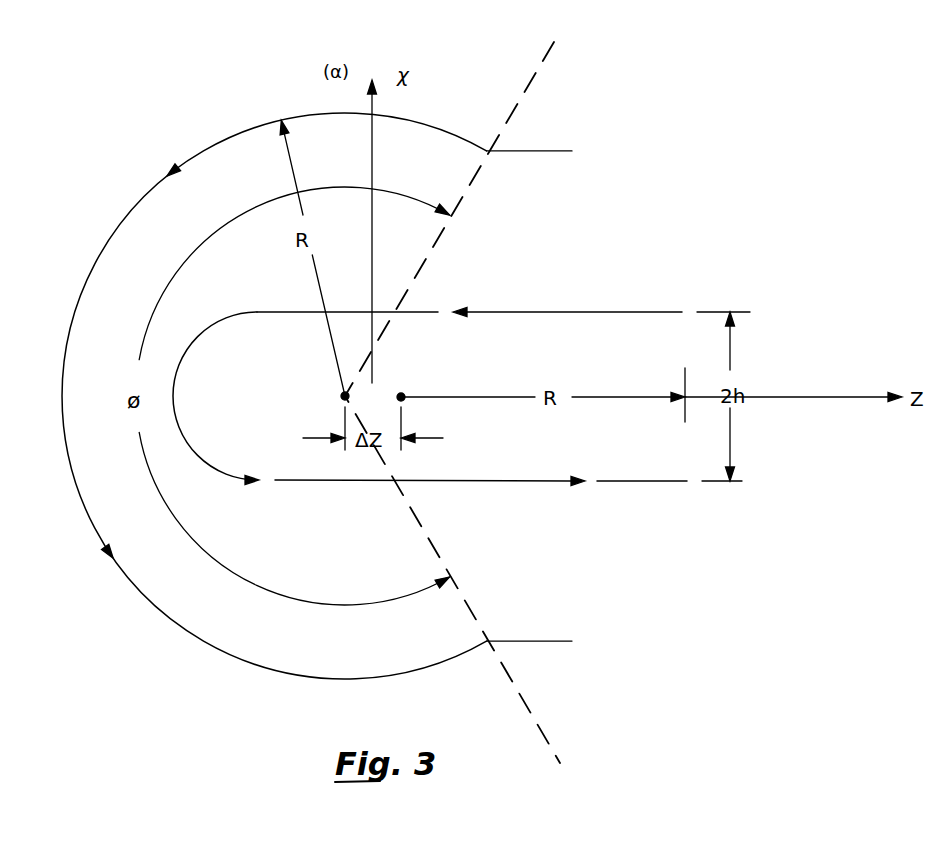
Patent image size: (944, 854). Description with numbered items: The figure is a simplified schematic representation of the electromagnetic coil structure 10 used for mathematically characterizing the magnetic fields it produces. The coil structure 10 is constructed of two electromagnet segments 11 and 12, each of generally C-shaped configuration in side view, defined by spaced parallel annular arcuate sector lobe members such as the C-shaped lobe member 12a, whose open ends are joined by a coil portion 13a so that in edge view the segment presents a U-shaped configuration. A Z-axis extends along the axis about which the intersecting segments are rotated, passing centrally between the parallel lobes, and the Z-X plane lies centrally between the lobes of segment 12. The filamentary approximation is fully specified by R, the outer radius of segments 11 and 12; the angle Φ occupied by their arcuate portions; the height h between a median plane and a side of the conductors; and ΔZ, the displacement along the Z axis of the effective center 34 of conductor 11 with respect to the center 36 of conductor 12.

The electromagnetic coil structure 10 is at (204, 456).
The electromagnet segment 11 is at (418, 314).
The electromagnet segment 12 is at (99, 434).
The C-shaped lobe member 12a is at (351, 156).
The coil portion 13a is at (253, 408).
The effective center 34 is at (403, 395).
The center 36 is at (343, 397).